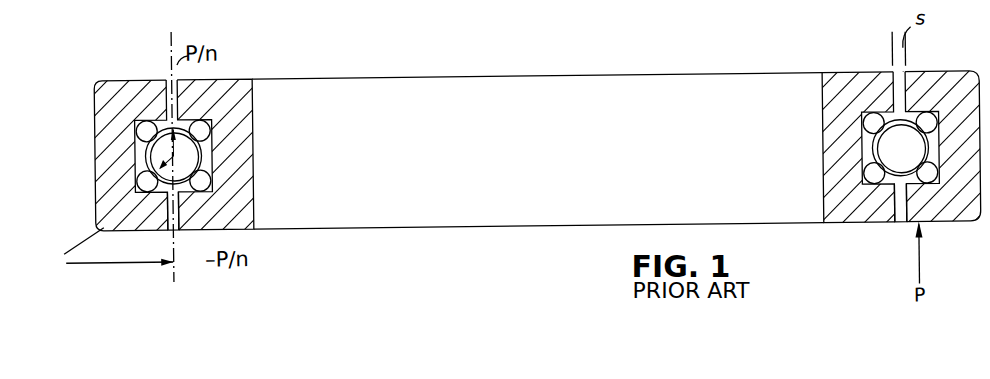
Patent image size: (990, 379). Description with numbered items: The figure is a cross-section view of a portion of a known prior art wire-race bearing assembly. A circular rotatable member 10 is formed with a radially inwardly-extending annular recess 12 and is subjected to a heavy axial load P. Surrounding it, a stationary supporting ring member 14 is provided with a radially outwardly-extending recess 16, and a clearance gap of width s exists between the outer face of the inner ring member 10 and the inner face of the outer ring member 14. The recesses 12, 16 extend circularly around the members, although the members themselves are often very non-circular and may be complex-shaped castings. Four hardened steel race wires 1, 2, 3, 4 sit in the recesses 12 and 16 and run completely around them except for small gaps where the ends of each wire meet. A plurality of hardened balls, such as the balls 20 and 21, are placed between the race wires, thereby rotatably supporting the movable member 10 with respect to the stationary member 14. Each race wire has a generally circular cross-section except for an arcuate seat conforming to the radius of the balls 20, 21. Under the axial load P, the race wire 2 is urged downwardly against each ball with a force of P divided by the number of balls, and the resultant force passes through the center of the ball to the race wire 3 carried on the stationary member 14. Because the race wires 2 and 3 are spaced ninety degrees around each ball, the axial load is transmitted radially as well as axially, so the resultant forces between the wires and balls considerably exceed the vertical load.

The circular rotatable member 10 is at (209, 115).
The radially inwardly-extending annular recess 12 is at (212, 157).
The stationary supporting ring member 14 is at (109, 115).
The radially outwardly-extending recess 16 is at (135, 157).
The hardened ball 20 is at (173, 192).
The hardened ball 21 is at (901, 193).
The hardened steel race wire 1 is at (536, 127).
The hardened steel race wire 2 is at (536, 126).
The hardened steel race wire 3 is at (537, 177).
The hardened steel race wire 4 is at (537, 176).